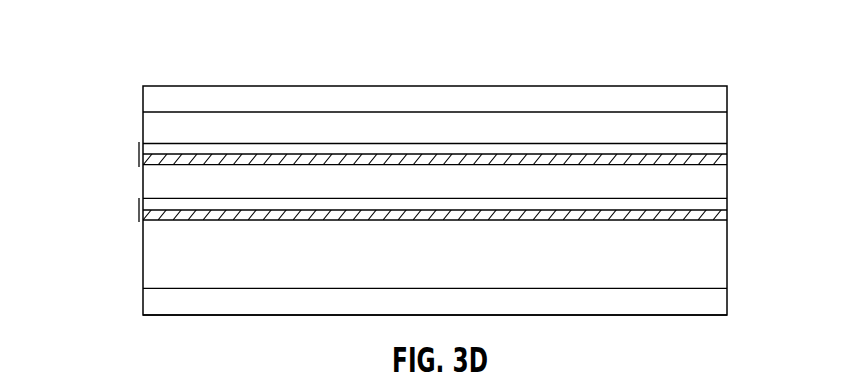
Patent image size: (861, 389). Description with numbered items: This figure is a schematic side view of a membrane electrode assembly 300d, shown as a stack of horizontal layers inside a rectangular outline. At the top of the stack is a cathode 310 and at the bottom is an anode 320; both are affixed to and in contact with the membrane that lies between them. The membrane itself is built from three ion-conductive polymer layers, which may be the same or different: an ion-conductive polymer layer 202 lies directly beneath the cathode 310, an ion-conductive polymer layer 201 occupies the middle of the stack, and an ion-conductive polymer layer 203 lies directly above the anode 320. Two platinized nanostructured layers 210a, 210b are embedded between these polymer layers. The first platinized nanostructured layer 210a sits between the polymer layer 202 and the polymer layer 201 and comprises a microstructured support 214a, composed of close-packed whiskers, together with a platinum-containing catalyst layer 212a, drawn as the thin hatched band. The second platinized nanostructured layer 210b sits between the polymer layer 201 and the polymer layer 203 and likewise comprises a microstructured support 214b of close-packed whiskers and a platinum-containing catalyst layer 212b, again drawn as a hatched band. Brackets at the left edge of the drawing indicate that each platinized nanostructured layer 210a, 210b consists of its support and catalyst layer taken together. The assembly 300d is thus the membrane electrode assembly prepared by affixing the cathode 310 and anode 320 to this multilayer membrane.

The membrane electrode assembly 300d is at (712, 40).
The cathode 310 is at (143, 100).
The first ion-conductive polymer layer 202 is at (143, 128).
The platinized nanostructured layer 210a is at (139, 151).
The microstructured support 214a is at (727, 150).
The platinum-containing catalyst layer 212a is at (727, 158).
The first ion-conductive polymer layer 201 is at (143, 187).
The platinized nanostructured layer 210b is at (139, 210).
The microstructured support 214b is at (727, 202).
The platinum-containing catalyst layer 212b is at (727, 217).
The first ion-conductive polymer layer 203 is at (143, 248).
The anode 320 is at (143, 298).